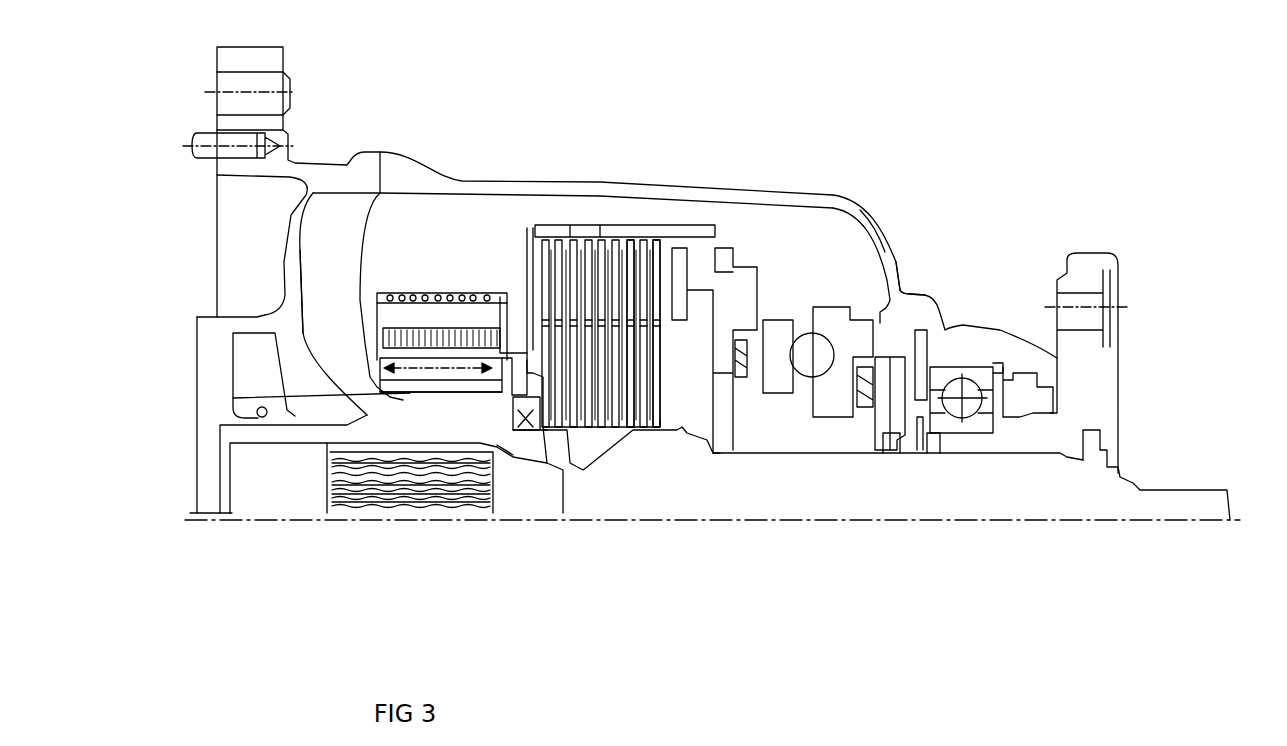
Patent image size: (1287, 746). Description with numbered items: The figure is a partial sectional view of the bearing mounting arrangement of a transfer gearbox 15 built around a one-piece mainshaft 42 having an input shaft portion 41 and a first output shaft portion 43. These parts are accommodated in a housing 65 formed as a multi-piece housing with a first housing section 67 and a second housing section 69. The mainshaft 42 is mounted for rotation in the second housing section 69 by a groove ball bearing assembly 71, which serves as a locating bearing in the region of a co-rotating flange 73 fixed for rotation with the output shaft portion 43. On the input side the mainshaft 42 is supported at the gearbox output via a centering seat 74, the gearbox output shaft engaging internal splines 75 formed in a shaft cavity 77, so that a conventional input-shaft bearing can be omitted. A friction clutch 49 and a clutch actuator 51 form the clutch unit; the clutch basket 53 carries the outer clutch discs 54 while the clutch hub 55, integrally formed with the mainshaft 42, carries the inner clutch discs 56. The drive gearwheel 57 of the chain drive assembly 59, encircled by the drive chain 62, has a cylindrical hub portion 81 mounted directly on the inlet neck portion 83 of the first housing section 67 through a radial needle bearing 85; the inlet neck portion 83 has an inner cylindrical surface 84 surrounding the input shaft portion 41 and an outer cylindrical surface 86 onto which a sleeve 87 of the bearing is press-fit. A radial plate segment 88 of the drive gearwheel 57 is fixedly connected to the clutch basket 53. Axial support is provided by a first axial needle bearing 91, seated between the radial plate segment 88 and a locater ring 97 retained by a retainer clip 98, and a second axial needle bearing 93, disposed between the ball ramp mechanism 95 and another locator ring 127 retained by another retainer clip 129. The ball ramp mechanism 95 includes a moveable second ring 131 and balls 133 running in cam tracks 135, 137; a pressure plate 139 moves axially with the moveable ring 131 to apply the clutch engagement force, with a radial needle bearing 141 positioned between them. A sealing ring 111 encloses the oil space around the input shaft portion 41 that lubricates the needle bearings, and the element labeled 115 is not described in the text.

The transfer gearbox 15 is at (578, 164).
The input shaft portion 41 is at (282, 435).
The mainshaft 42 is at (1046, 503).
The first output shaft portion 43 is at (1167, 502).
The friction clutch 49 is at (643, 237).
The clutch actuator 51 is at (808, 266).
The clutch basket 53 is at (533, 233).
The outer clutch discs 54 is at (667, 230).
The clutch hub 55 is at (680, 428).
The inner clutch discs 56 is at (645, 425).
The drive gearwheel 57 is at (395, 365).
The chain drive assembly 59 is at (390, 272).
The drive chain 62 is at (437, 292).
The housing 65 is at (740, 193).
The first housing section 67 is at (318, 172).
The second housing section 69 is at (870, 240).
The groove ball bearing assembly 71 is at (958, 452).
The co-rotating flange 73 is at (1080, 263).
The centering seat 74 is at (283, 500).
The internal splines 75 is at (357, 505).
The shaft cavity 77 is at (513, 505).
The cylindrical hub portion 81 is at (460, 350).
The inlet neck portion 83 is at (355, 508).
The inner cylindrical surface 84 is at (413, 355).
The radial needle bearing 85 is at (440, 362).
The outer cylindrical surface 86 is at (295, 272).
The sleeve 87 is at (233, 398).
The radial plate segment 88 is at (631, 448).
The first axial needle bearing 91 is at (530, 430).
The second axial needle bearing 93 is at (910, 323).
The ball ramp mechanism 95 is at (842, 298).
The locater ring 97 is at (510, 462).
The retainer clip 98 is at (483, 400).
The sealing ring 111 is at (233, 350).
The hub wall 115 is at (830, 393).
The locator ring 127 is at (890, 452).
The retainer clip 129 is at (912, 452).
The moveable second ring 131 is at (778, 337).
The balls 133 is at (792, 352).
The cam tracks 135 is at (812, 355).
The cam tracks 137 is at (720, 447).
The pressure plate 139 is at (725, 305).
The radial needle bearing 141 is at (733, 367).